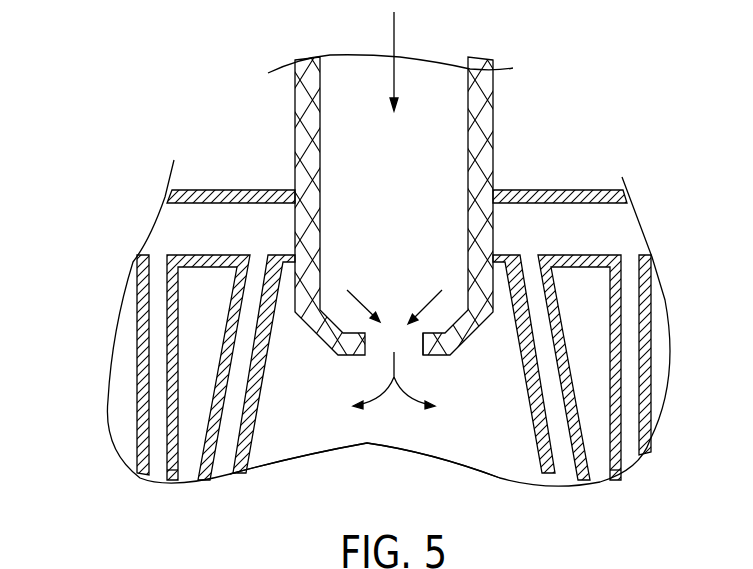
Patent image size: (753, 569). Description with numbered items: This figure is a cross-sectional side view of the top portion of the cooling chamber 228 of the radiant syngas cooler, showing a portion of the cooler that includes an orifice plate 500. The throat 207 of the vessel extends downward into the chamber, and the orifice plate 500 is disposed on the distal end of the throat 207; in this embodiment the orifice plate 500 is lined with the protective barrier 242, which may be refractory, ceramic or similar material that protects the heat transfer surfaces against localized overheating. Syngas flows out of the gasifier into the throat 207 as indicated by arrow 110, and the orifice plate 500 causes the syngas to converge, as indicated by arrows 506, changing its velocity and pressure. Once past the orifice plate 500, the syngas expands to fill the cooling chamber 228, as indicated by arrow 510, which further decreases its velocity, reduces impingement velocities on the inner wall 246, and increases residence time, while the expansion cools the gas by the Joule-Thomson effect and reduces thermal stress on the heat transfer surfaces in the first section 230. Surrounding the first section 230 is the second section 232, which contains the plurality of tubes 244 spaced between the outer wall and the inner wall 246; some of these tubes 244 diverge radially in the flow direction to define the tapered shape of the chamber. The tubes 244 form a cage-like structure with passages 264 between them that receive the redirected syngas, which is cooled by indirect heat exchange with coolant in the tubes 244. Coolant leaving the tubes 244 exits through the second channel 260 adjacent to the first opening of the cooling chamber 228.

The cooling chamber 228 is at (200, 42).
The syngas 110 is at (392, 32).
The protective barrier 242 is at (320, 100).
The throat 207 is at (493, 113).
The second section 232 is at (233, 190).
The second channel 260 is at (163, 237).
The plurality of tubes 244 is at (605, 330).
The inner wall 246 is at (267, 358).
The arrows indicating convergence of syngas 506 is at (423, 302).
The arrow indicating expansion of syngas 510 is at (390, 360).
The orifice plate 500 is at (423, 355).
The first section 230 is at (345, 443).
The passages 264 is at (190, 458).